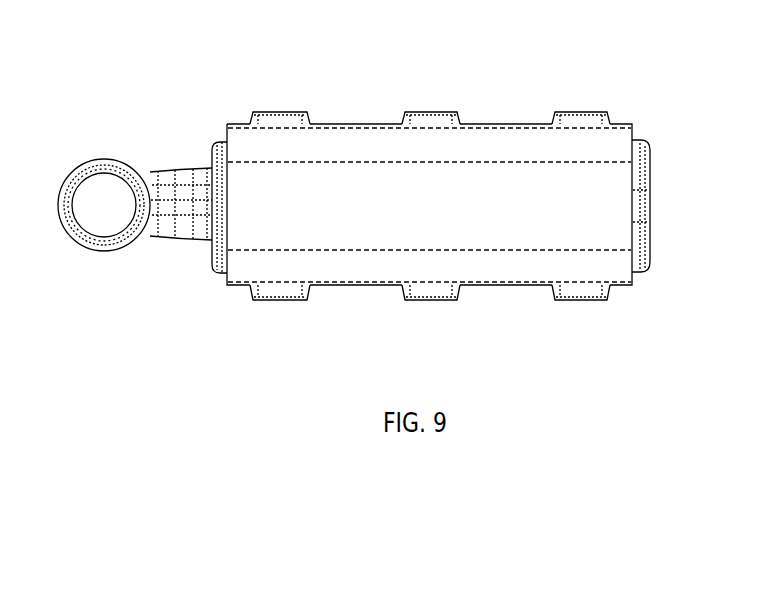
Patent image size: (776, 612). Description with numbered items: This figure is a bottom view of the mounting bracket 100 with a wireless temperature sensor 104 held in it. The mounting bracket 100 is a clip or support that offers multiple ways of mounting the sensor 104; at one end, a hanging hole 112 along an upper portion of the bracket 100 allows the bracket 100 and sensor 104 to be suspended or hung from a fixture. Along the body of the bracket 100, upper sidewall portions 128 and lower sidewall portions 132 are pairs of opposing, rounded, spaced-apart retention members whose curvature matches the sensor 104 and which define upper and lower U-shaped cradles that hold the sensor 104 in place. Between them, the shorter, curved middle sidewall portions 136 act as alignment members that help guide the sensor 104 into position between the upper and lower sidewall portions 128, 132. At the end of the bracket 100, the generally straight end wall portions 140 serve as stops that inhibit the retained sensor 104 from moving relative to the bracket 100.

The mounting bracket 100 is at (113, 111).
The wireless temperature sensor 104 is at (632, 120).
The hanging hole 112 is at (97, 250).
The upper sidewall portions 128 is at (281, 111).
The lower sidewall portions 132 is at (567, 112).
The middle sidewall portions 136 is at (427, 111).
The end wall portions 140 is at (643, 203).